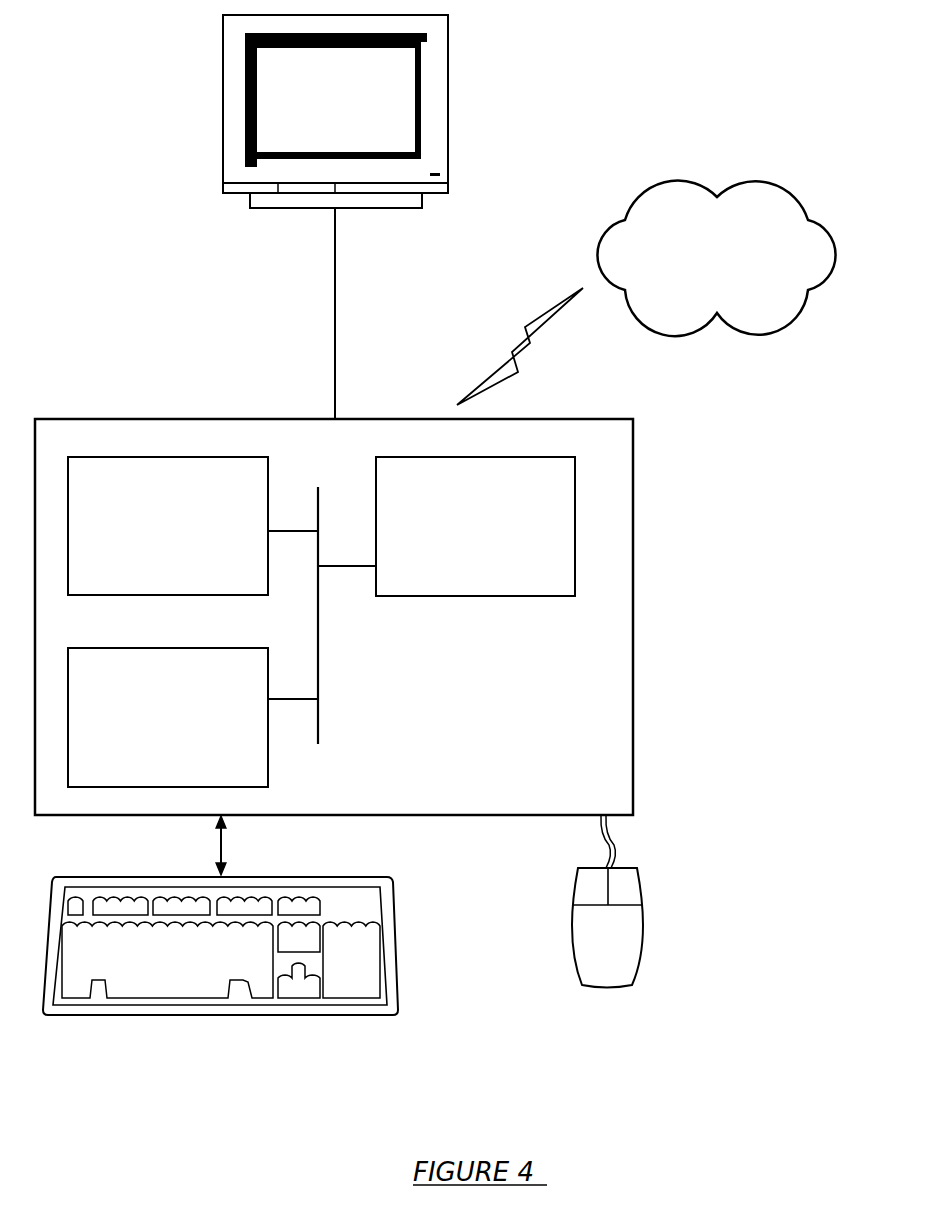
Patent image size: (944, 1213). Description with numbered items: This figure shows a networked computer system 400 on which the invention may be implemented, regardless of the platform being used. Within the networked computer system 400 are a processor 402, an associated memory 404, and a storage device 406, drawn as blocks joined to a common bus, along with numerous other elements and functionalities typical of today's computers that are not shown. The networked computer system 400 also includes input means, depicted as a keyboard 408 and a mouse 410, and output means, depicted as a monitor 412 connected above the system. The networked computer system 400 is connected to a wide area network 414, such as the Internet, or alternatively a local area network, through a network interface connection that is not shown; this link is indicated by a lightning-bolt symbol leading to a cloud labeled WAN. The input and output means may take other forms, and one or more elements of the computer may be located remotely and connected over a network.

The networked computer system 400 is at (655, 663).
The processor 402 is at (473, 537).
The memory 404 is at (151, 536).
The storage device 406 is at (151, 728).
The keyboard 408 is at (145, 982).
The mouse 410 is at (591, 943).
The monitor 412 is at (318, 115).
The wide area network 414 is at (711, 277).